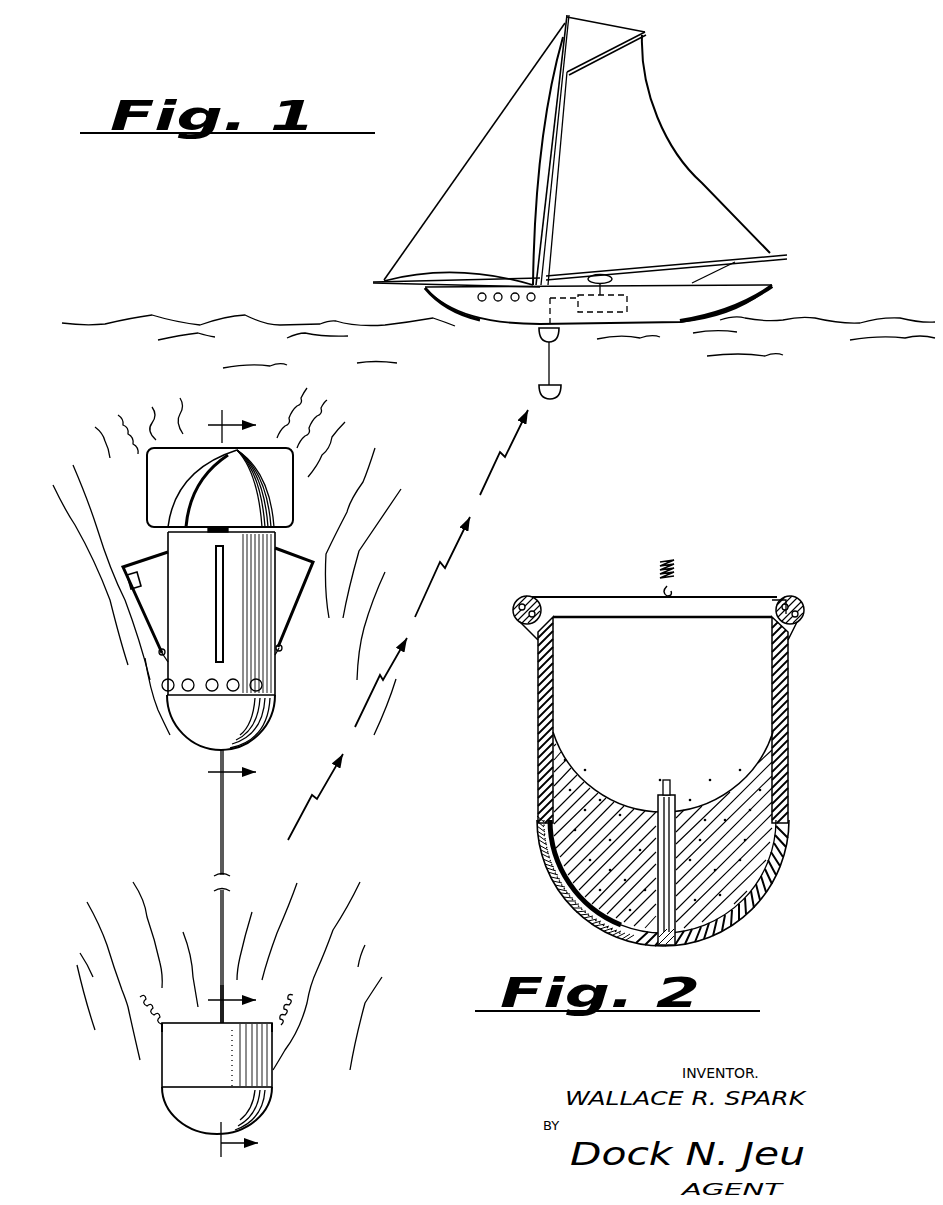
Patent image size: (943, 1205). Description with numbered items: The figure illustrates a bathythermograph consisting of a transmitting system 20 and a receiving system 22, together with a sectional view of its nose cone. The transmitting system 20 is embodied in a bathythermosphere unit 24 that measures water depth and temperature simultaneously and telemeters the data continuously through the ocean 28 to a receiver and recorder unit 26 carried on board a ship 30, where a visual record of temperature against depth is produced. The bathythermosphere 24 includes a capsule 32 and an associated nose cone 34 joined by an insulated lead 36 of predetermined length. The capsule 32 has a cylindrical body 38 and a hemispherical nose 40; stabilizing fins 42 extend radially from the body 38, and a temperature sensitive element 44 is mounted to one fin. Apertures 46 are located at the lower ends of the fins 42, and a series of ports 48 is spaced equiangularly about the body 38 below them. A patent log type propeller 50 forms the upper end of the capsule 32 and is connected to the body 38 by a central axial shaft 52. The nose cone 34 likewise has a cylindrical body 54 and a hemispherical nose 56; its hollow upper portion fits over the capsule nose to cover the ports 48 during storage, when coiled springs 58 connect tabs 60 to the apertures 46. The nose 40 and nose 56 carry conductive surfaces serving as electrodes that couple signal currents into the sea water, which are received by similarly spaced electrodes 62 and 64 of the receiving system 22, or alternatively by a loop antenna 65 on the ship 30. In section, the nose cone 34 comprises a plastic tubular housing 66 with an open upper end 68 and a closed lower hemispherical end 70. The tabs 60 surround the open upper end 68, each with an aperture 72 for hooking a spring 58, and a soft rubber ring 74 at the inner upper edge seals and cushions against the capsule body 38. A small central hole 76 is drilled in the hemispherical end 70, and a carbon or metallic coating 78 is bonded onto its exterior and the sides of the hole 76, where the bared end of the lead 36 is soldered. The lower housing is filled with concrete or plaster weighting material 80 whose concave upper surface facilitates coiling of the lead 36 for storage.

In FIG. 1, the transmitting system 20 is at (150, 788).
In FIG. 1, the receiving system 22 is at (597, 362).
In FIG. 1, the bathythermosphere unit 24 is at (227, 587).
In FIG. 1, the receiver and recorder unit 26 is at (630, 302).
In FIG. 1, the ocean 28 is at (140, 315).
In FIG. 1, the ship 30 is at (447, 195).
In FIG. 1, the capsule 32 is at (165, 662).
In FIG. 1, the nose cone 34 is at (229, 1020).
In FIG. 2, the nose cone 34 is at (653, 750).
In FIG. 1, the lead 36 is at (220, 838).
In FIG. 2, the lead 36 is at (656, 795).
In FIG. 1, the body 38 is at (268, 548).
In FIG. 1, the nose 40 is at (266, 733).
In FIG. 1, the stabilizing fins 42 is at (304, 590).
In FIG. 1, the temperature sensitive element 44 is at (128, 580).
In FIG. 1, the apertures 46 is at (158, 651).
In FIG. 1, the ports 48 is at (168, 688).
In FIG. 1, the patent log type propeller 50 is at (147, 483).
In FIG. 1, the central axial shaft 52 is at (232, 528).
In FIG. 1, the body 54 is at (262, 1050).
In FIG. 1, the nose 56 is at (262, 1107).
In FIG. 1, the coiled springs 58 is at (140, 1004).
In FIG. 2, the coiled springs 58 is at (657, 578).
In FIG. 1, the tabs 60 is at (162, 1028).
In FIG. 2, the tabs 60 is at (521, 600).
In FIG. 1, the electrode 62 is at (534, 334).
In FIG. 1, the electrode 64 is at (540, 393).
In FIG. 1, the loop antenna 65 is at (622, 279).
In FIG. 2, the tubular housing 66 is at (537, 718).
In FIG. 2, the open upper end 68 is at (576, 597).
In FIG. 2, the lower hemispherical end 70 is at (576, 907).
In FIG. 2, the aperture 72 is at (523, 628).
In FIG. 2, the soft rubber ring 74 is at (771, 598).
In FIG. 2, the central hole 76 is at (622, 940).
In FIG. 2, the carbon or metallic coating 78 is at (547, 880).
In FIG. 2, the weighting material 80 is at (735, 878).